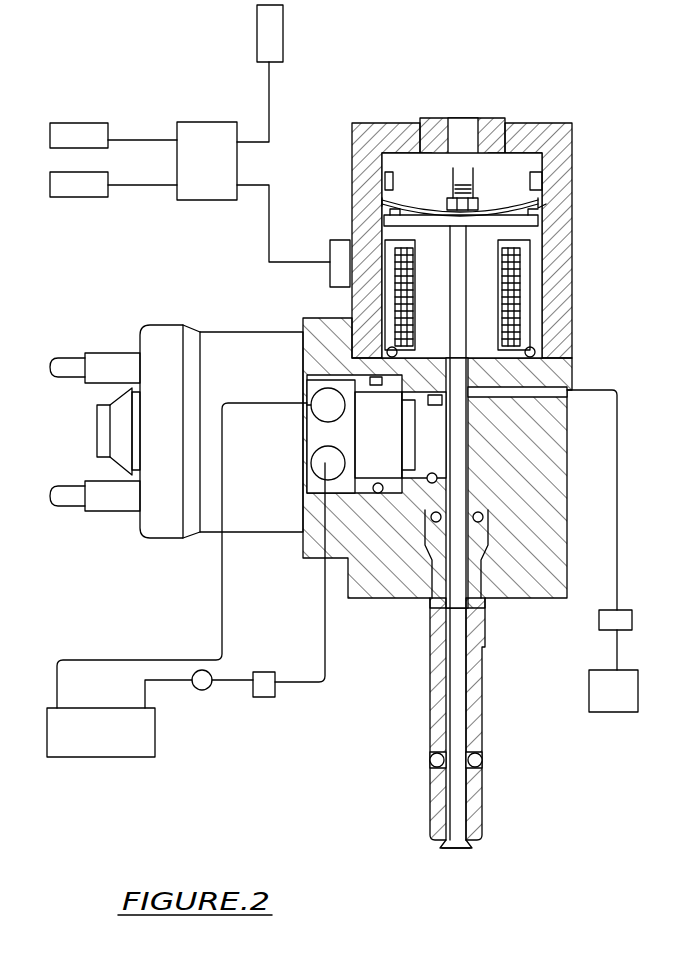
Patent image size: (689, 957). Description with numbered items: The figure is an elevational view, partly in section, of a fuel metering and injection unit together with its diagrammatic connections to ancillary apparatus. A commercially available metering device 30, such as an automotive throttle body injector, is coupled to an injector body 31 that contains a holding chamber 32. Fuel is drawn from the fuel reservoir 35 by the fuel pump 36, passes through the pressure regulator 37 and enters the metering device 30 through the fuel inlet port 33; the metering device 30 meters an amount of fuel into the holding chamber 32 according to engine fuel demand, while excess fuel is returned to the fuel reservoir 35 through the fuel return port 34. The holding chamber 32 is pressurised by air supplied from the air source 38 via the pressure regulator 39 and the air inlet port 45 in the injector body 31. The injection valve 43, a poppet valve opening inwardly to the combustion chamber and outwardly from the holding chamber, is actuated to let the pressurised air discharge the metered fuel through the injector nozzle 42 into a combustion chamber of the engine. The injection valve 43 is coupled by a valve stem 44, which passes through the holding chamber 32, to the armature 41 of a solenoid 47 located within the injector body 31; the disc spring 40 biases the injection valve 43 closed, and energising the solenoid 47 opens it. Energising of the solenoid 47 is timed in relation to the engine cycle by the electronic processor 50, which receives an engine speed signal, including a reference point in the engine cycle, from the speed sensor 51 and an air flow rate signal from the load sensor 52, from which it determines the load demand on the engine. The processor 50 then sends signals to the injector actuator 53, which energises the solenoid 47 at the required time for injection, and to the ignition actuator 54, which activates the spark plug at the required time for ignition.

The metering device 30 is at (220, 332).
The injector body 31 is at (548, 548).
The holding chamber 32 is at (428, 433).
The fuel inlet port 33 is at (312, 463).
The fuel return port 34 is at (312, 400).
The fuel reservoir 35 is at (82, 758).
The fuel pump 36 is at (198, 692).
The pressure regulator 37 is at (262, 698).
The air source 38 is at (604, 712).
The pressure regulator 39 is at (625, 626).
The disc spring 40 is at (546, 192).
The armature 41 is at (540, 232).
The injector nozzle 42 is at (445, 850).
The injection valve 43 is at (474, 848).
The valve stem 44 is at (480, 732).
The air inlet port 45 is at (560, 385).
The solenoid 47 is at (545, 296).
The electronic processor 50 is at (203, 134).
The speed sensor 51 is at (76, 197).
The load sensor 52 is at (83, 123).
The injector actuator 53 is at (330, 246).
The ignition actuator 54 is at (283, 36).